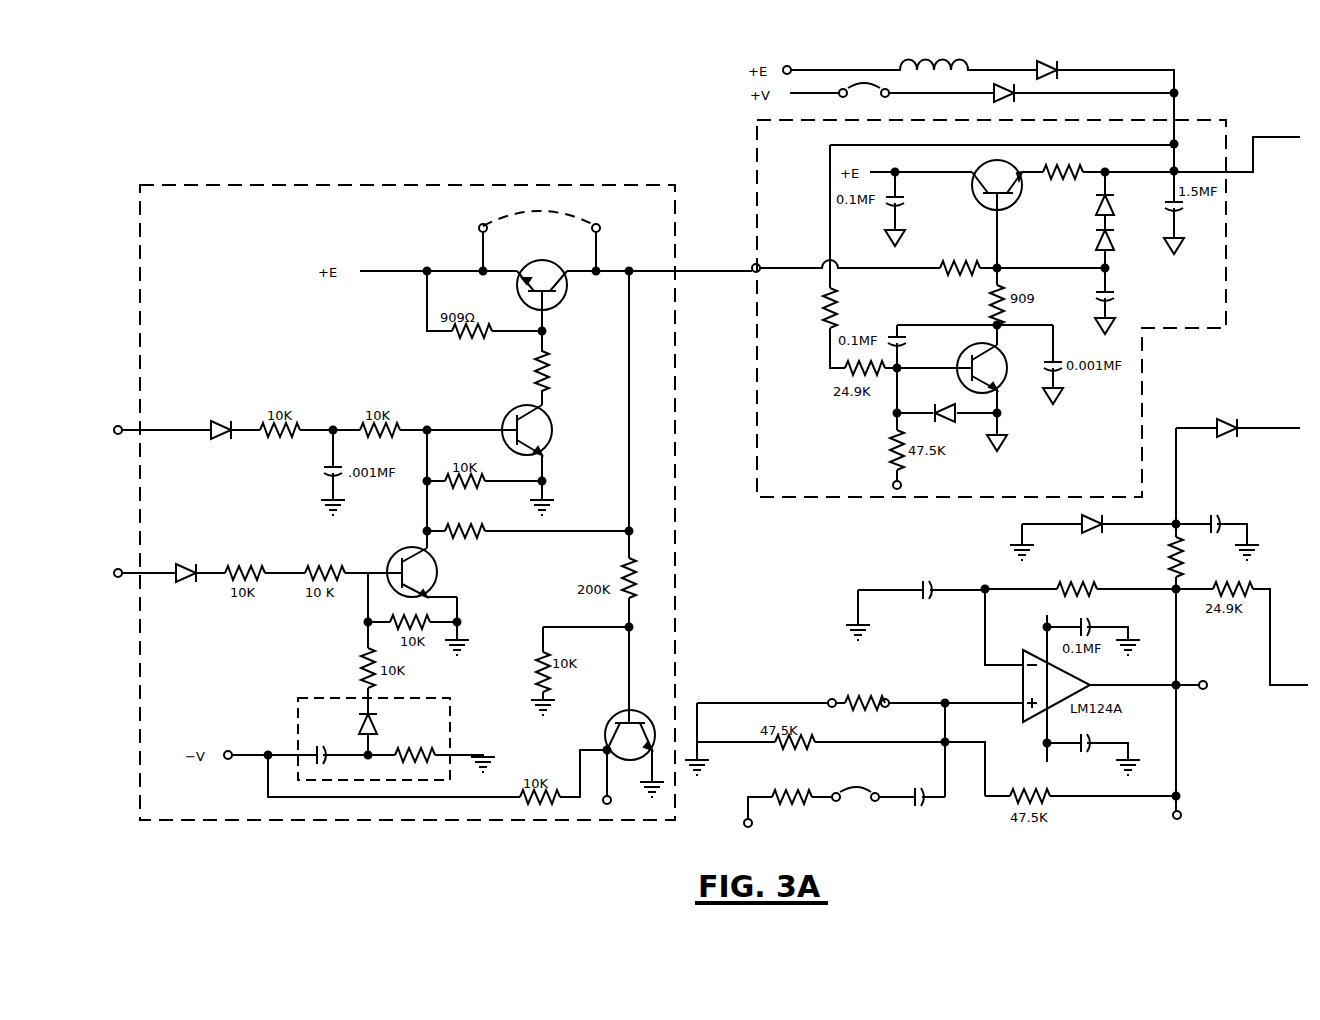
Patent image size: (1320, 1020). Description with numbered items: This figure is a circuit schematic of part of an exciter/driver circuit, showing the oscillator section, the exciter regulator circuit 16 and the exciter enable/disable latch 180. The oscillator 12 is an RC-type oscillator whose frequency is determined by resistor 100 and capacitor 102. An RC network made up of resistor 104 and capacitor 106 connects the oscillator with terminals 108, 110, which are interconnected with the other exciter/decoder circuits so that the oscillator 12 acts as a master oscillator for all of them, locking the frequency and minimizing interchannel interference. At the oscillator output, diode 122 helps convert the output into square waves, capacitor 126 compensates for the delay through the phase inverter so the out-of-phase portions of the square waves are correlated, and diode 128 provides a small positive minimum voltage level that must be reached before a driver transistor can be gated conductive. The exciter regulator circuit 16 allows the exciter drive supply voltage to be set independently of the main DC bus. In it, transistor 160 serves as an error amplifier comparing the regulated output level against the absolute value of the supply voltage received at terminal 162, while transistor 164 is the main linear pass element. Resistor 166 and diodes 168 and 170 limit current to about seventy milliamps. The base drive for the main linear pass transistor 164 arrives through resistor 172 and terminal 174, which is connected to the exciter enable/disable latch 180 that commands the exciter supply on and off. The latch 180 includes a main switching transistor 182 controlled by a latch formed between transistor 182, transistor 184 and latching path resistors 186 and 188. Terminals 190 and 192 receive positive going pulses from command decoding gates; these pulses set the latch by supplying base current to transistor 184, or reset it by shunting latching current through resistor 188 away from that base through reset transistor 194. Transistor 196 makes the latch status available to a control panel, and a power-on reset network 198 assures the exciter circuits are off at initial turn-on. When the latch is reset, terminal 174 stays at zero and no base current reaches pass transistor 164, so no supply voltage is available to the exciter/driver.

The oscillator 12 is at (836, 606).
The exciter regulator circuit 16 is at (1200, 120).
The resistor 100 is at (1052, 586).
The capacitor 102 is at (925, 584).
The RC network resistor 104 is at (783, 790).
The RC network capacitor 106 is at (915, 789).
The terminal 108 is at (745, 824).
The terminal 110 is at (1183, 812).
The diode 122 is at (1087, 532).
The capacitor 126 is at (1208, 518).
The diode 128 is at (1225, 419).
The transistor 160 is at (1000, 390).
The terminal 162 is at (901, 485).
The main linear pass transistor 164 is at (977, 200).
The resistor 166 is at (1068, 180).
The diode 168 is at (1093, 207).
The diode 170 is at (1118, 248).
The resistor 172 is at (958, 276).
The terminal 174 is at (754, 265).
The exciter enable/disable latch 180 is at (318, 183).
The main switching transistor 182 is at (558, 304).
The transistor 184 is at (552, 433).
The latching path resistor 186 is at (550, 368).
The latching path resistor 188 is at (492, 536).
The terminal 190 is at (121, 427).
The terminal 192 is at (121, 570).
The reset transistor 194 is at (436, 581).
The transistor 196 is at (618, 718).
The power-on reset network 198 is at (320, 697).